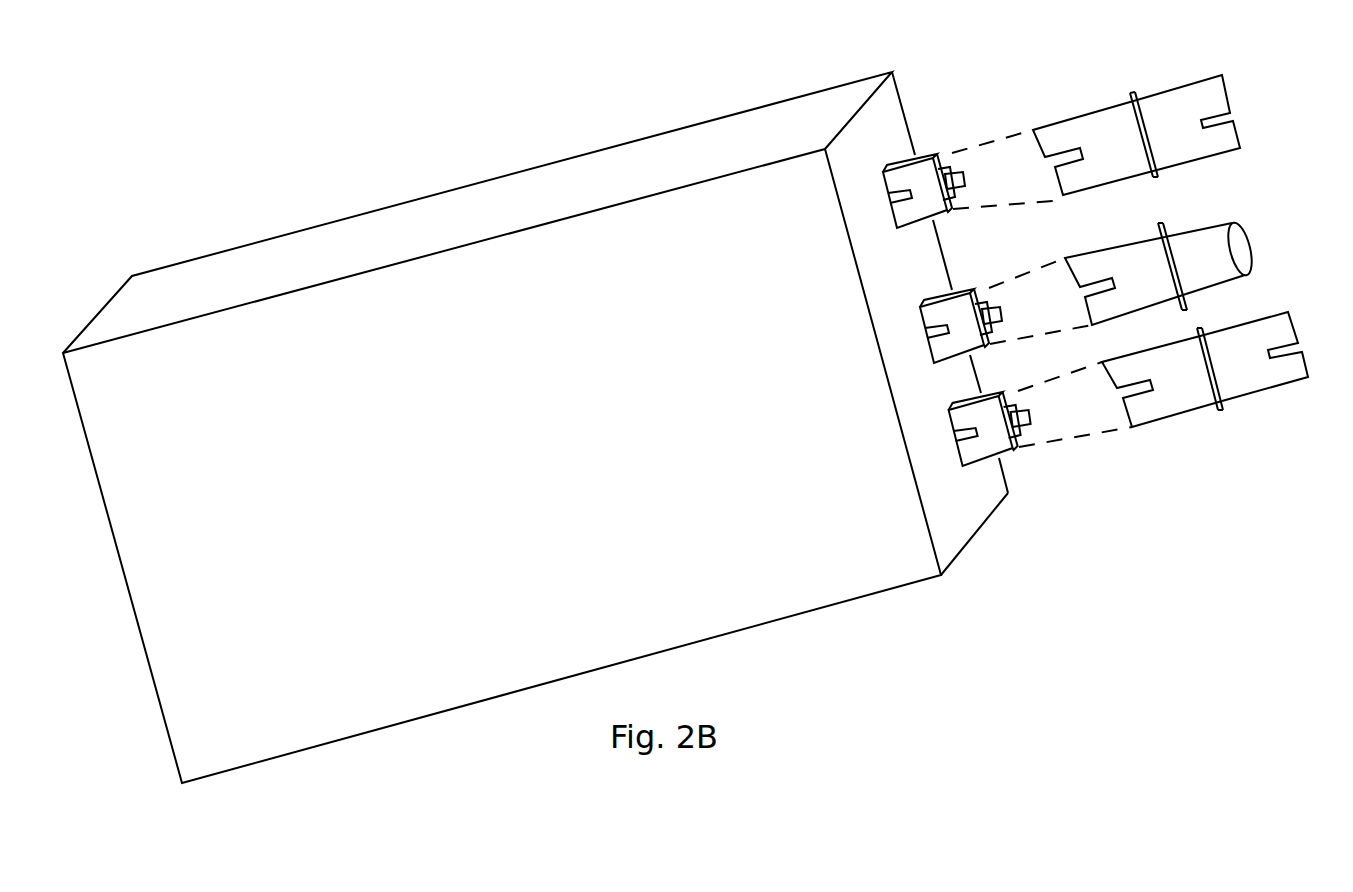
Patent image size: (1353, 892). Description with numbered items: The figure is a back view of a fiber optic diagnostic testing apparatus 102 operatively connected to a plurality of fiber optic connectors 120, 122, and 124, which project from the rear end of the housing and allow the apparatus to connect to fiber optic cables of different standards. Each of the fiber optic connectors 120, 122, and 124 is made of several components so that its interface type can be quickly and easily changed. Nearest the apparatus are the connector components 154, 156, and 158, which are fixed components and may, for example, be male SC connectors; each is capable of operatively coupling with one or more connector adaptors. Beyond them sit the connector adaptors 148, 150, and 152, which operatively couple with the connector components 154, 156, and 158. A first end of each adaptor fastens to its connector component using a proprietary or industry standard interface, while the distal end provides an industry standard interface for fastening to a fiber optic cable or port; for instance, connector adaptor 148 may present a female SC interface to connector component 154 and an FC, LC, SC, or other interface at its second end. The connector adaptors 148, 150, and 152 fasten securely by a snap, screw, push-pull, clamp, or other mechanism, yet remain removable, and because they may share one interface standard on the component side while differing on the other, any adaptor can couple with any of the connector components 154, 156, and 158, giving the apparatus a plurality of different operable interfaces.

The fiber optic diagnostic testing apparatus 102 is at (337, 220).
The fiber optic connector 120 is at (1217, 63).
The fiber optic connector 122 is at (1250, 198).
The fiber optic connector 124 is at (1312, 390).
The connector adaptor 148 is at (1231, 85).
The connector adaptor 150 is at (1243, 231).
The connector adaptor 152 is at (1260, 310).
The connector component 154 is at (893, 214).
The connector component 156 is at (875, 326).
The connector component 158 is at (906, 433).